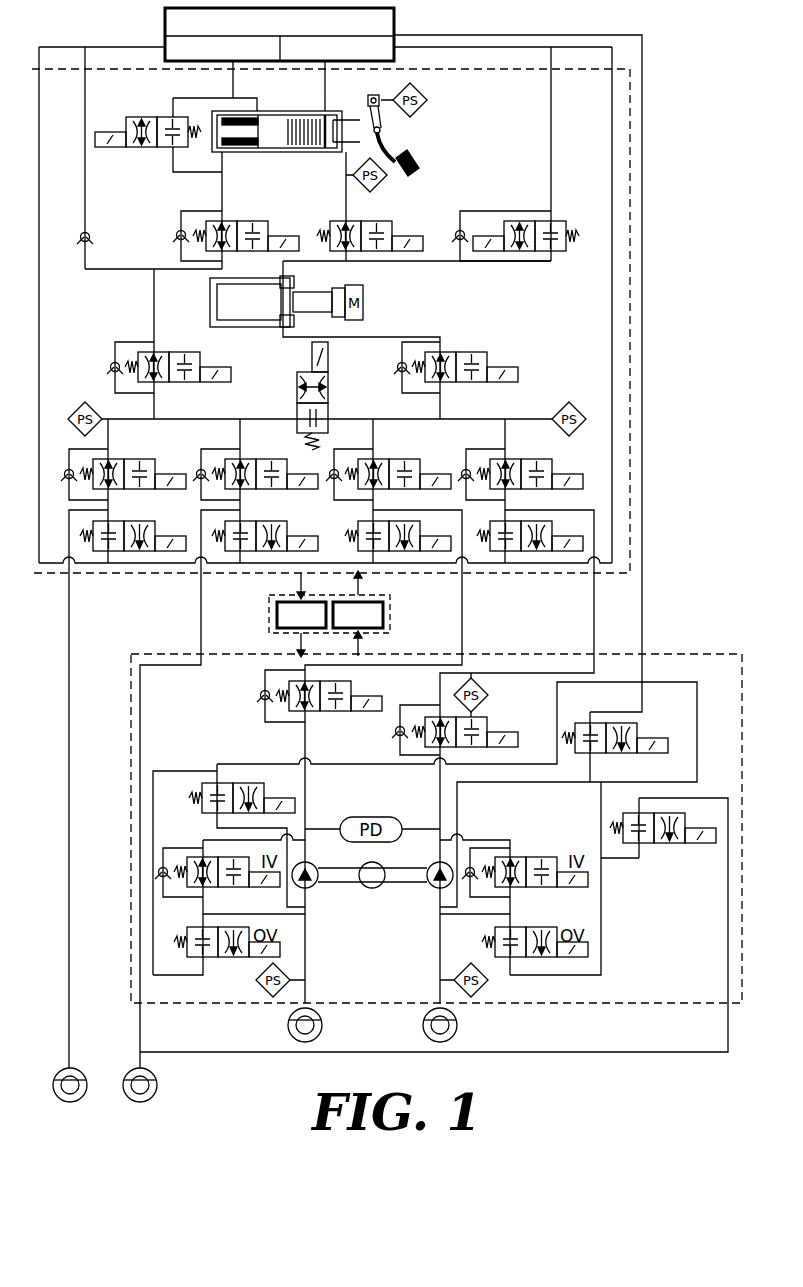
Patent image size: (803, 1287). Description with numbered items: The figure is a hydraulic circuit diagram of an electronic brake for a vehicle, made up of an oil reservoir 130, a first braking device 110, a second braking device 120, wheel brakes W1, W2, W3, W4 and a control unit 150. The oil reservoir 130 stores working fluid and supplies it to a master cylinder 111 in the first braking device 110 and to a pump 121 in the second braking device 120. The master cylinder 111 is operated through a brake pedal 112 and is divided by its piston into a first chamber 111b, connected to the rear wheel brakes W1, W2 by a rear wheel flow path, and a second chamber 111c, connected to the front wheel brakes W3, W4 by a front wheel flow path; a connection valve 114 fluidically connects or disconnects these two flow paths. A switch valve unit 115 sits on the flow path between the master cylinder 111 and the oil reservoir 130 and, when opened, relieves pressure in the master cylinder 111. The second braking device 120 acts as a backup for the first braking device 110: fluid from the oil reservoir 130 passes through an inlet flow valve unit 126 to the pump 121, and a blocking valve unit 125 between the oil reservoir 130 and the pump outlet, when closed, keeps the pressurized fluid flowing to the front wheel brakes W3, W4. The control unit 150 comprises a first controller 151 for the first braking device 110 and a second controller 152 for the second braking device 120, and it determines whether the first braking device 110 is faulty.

The oil reservoir 130 is at (396, 27).
The brake pedal 112 is at (392, 153).
The master cylinder 111 is at (325, 193).
The first chamber 111b is at (253, 152).
The second chamber 111c is at (297, 152).
The switch valve unit 115 is at (140, 147).
The connection valve 114 is at (330, 410).
The first braking device 110 is at (60, 573).
The control unit 150 is at (390, 614).
The first controller 151 is at (277, 612).
The second controller 152 is at (383, 612).
The second braking device 120 is at (685, 654).
The blocking valve unit 125 is at (327, 712).
The inlet flow valve unit 126 is at (230, 783).
The pump 121 is at (430, 893).
The rear wheel brake W1 is at (75, 1071).
The rear wheel brake W2 is at (157, 1088).
The front wheel brake W3 is at (288, 1040).
The front wheel brake W4 is at (458, 1042).